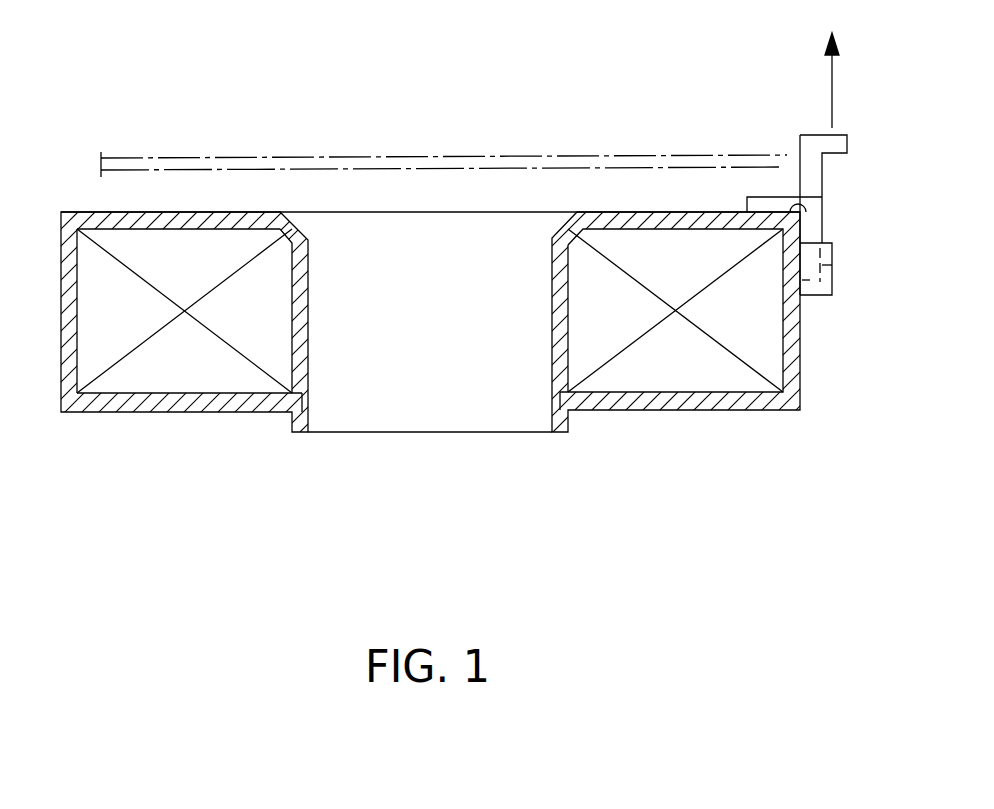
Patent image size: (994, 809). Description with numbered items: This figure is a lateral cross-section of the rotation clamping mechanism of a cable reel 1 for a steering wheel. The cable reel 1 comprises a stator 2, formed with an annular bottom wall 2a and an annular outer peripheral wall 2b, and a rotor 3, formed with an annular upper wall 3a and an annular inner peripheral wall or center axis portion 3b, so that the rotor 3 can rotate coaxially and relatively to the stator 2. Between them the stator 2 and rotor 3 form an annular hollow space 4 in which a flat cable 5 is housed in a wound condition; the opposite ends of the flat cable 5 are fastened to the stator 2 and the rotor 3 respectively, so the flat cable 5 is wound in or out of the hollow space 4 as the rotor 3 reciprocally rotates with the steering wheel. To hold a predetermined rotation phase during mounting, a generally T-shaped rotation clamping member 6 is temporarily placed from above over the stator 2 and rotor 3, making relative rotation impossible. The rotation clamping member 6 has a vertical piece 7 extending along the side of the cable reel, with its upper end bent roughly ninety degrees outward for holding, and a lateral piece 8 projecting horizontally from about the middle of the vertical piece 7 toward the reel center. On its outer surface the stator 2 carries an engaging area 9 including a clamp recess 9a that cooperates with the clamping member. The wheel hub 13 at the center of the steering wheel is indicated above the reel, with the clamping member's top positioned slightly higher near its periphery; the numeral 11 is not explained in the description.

The cable reel 1 is at (108, 553).
The stator 2 is at (162, 498).
The annular bottom wall 2a is at (160, 412).
The annular outer peripheral wall 2b is at (61, 333).
The rotor 3 is at (232, 498).
The annular upper wall 3a is at (240, 232).
The annular inner peripheral wall 3b is at (308, 333).
The annular hollow space 4 is at (650, 377).
The flat cable 5 is at (668, 318).
The rotation clamping member 6 is at (806, 101).
The vertical piece 7 is at (813, 176).
The lateral piece 8 is at (757, 197).
The engaging area 9 is at (822, 297).
The clamp recess 9a is at (840, 273).
The pivot pin 11 is at (798, 197).
The wheel hub 13 is at (556, 148).